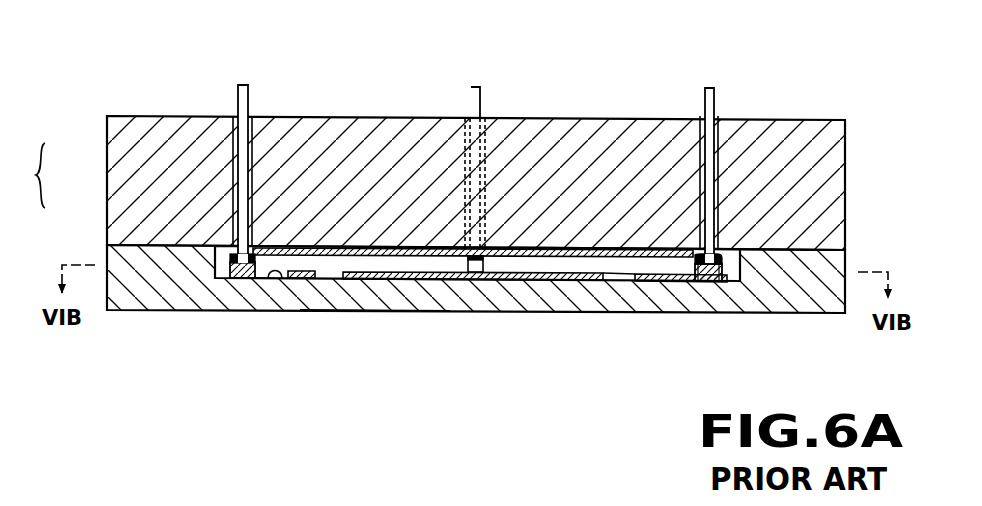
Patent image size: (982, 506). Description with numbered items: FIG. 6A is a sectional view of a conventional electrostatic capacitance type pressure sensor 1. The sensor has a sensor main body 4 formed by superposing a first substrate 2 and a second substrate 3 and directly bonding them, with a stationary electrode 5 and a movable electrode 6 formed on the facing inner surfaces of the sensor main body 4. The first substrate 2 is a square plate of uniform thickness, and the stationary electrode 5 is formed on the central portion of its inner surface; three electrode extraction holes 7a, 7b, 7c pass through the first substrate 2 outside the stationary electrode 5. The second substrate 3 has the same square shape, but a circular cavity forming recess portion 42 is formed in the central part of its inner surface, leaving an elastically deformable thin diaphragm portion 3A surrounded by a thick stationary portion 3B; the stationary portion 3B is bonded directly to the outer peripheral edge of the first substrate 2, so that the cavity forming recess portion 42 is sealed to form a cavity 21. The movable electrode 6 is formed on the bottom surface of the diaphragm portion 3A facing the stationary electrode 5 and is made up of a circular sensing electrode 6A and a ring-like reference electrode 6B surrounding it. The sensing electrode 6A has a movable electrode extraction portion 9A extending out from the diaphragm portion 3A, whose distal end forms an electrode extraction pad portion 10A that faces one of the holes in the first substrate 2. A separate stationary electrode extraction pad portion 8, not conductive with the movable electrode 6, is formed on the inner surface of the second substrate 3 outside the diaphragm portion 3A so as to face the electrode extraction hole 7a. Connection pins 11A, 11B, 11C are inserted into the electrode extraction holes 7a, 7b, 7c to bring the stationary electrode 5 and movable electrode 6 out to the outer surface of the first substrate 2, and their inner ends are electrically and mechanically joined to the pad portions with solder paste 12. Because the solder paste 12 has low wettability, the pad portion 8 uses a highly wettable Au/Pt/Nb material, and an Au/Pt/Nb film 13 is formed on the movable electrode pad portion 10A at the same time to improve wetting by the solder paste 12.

The electrostatic capacitance type pressure sensor 1 is at (138, 31).
The first substrate 2 is at (105, 183).
The second substrate 3 is at (105, 252).
The diaphragm portion 3A is at (378, 297).
The stationary portion 3B is at (822, 272).
The sensor main body 4 is at (32, 175).
The stationary electrode 5 is at (598, 250).
The movable electrode 6 is at (535, 339).
The sensing electrode 6A is at (570, 282).
The reference electrode 6B is at (645, 282).
The electrode extraction hole 7a is at (248, 117).
The electrode extraction hole 7b is at (716, 122).
The electrode extraction hole 7c is at (482, 118).
The stationary electrode extraction pad portion 8 is at (237, 280).
The movable electrode extraction portion 9A is at (680, 283).
The electrode extraction pad portion 10A is at (750, 283).
The connection pin 11A is at (238, 95).
The connection pin 11B is at (705, 98).
The connection pin 11C is at (471, 97).
The solder paste 12 is at (210, 283).
The Au/Pt/Nb film 13 is at (476, 283).
The cavity 21 is at (316, 278).
The cavity forming recess portion 42 is at (276, 278).